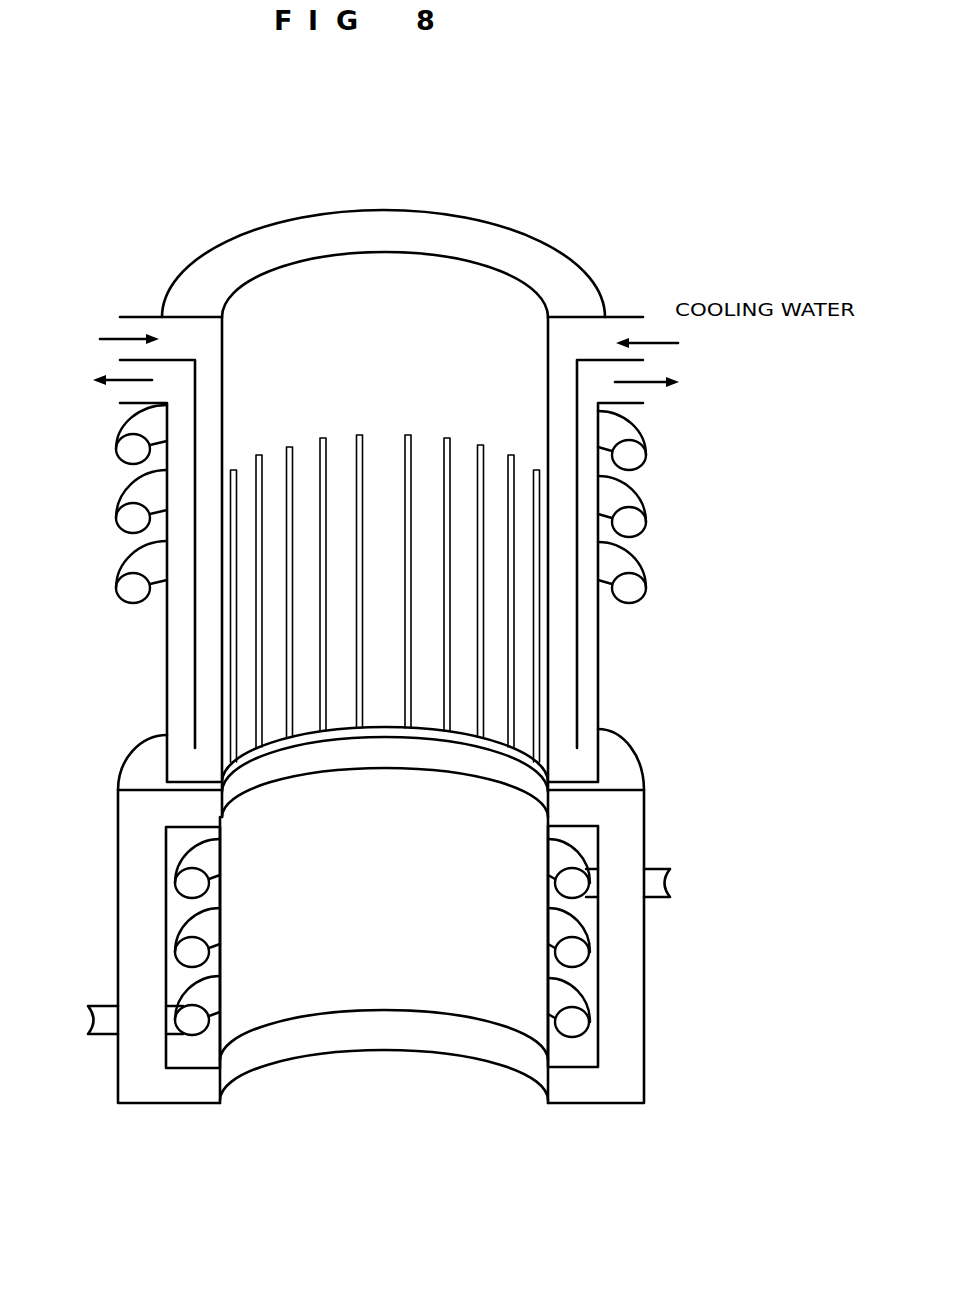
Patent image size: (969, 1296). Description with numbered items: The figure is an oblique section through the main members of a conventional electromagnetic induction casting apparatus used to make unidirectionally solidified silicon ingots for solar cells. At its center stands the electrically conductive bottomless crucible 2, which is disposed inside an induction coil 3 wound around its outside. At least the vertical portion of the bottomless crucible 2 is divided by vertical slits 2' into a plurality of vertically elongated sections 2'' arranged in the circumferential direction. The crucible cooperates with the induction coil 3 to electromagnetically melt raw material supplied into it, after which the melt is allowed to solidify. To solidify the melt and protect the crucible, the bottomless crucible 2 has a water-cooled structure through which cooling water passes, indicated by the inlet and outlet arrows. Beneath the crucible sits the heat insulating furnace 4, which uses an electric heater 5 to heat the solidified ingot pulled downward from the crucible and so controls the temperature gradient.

The bottomless crucible 2 is at (417, 571).
The vertical slits 2' is at (431, 448).
The vertically elongated sections 2'' is at (224, 600).
The induction coil 3 is at (646, 588).
The heat insulating furnace 4 is at (637, 947).
The electric heater 5 is at (592, 1022).